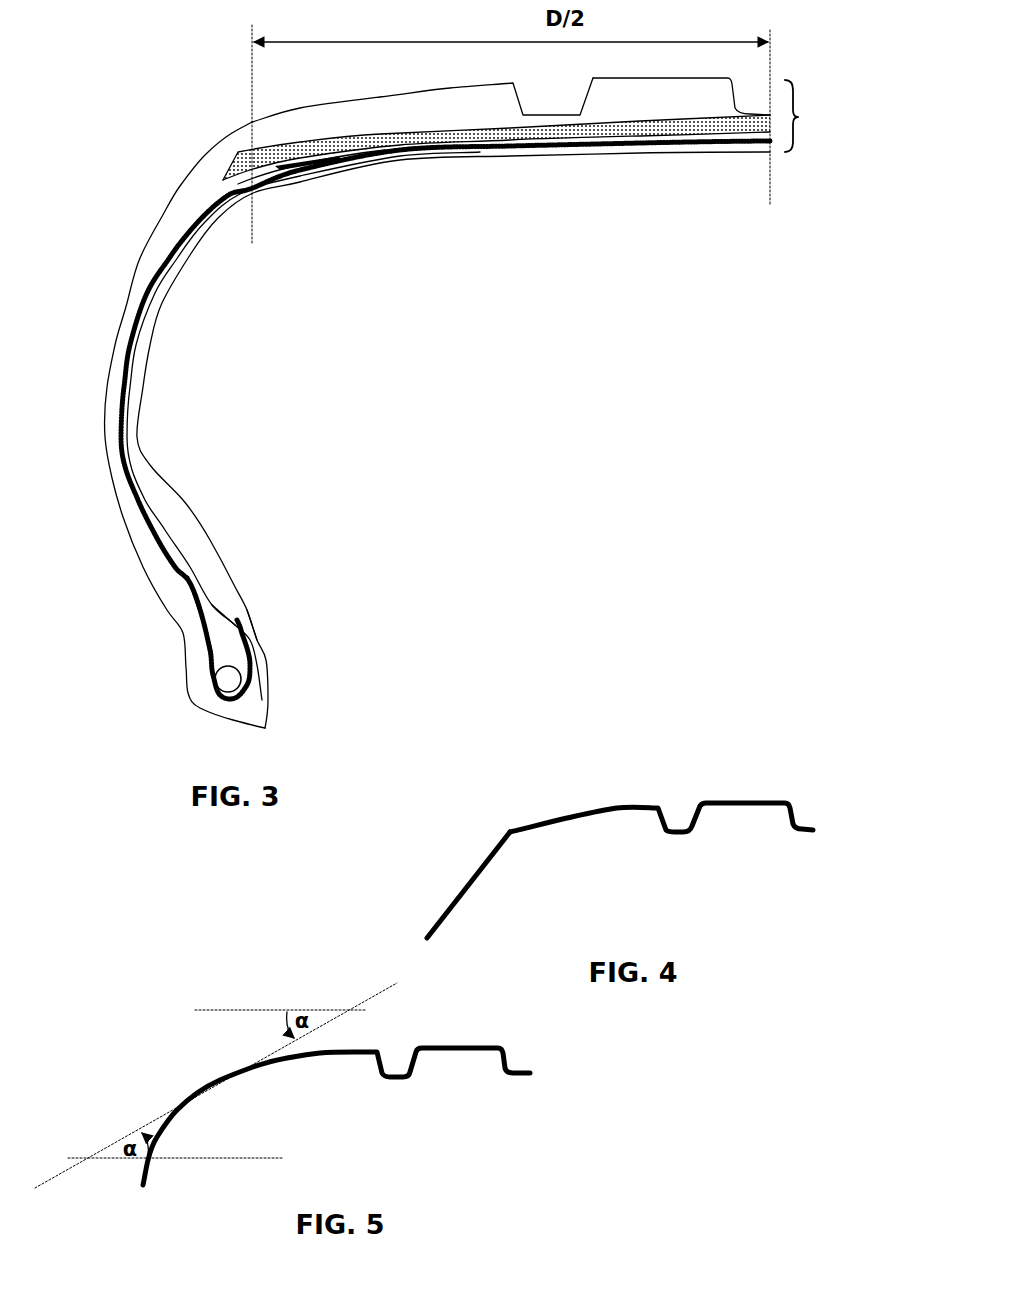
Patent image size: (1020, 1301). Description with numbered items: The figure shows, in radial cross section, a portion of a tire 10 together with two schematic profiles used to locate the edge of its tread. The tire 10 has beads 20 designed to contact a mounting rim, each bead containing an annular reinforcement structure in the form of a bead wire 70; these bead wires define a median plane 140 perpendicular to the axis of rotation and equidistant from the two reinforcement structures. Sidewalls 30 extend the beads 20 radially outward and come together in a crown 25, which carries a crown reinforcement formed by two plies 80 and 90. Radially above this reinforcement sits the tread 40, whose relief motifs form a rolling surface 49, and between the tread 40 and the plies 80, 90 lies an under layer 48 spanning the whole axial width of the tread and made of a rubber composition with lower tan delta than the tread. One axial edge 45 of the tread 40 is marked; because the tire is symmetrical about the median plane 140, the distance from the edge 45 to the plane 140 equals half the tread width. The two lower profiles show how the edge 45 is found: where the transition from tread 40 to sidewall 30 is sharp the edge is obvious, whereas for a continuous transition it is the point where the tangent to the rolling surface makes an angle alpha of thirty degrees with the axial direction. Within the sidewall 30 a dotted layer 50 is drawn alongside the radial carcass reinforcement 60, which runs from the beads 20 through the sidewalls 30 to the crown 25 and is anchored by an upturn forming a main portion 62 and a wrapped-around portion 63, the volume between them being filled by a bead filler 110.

In FIG. 3, the tire 10 is at (168, 165).
In FIG. 3, the beads 20 is at (308, 588).
In FIG. 3, the crown 25 is at (815, 116).
In FIG. 3, the sidewalls 30 is at (127, 320).
In FIG. 4, the sidewalls 30 is at (450, 897).
In FIG. 3, the tread 40 is at (480, 124).
In FIG. 4, the tread 40 is at (615, 846).
In FIG. 5, the tread 40 is at (331, 1092).
In FIG. 3, the axial edge 45 is at (250, 121).
In FIG. 4, the axial edge 45 is at (508, 829).
In FIG. 5, the axial edge 45 is at (213, 1085).
In FIG. 3, the under layer 48 is at (438, 133).
In FIG. 3, the rolling surface 49 is at (662, 76).
In FIG. 3, the carcass ply 50 is at (138, 337).
In FIG. 3, the radial carcass reinforcement 60 is at (125, 388).
In FIG. 3, the main portion 62 is at (223, 595).
In FIG. 3, the wrapped-around portion 63 is at (200, 580).
In FIG. 3, the bead wire 70 is at (225, 682).
In FIG. 3, the ply 80 is at (325, 162).
In FIG. 3, the ply 90 is at (353, 157).
In FIG. 3, the bead filler 110 is at (233, 627).
In FIG. 3, the median plane 140 is at (772, 198).